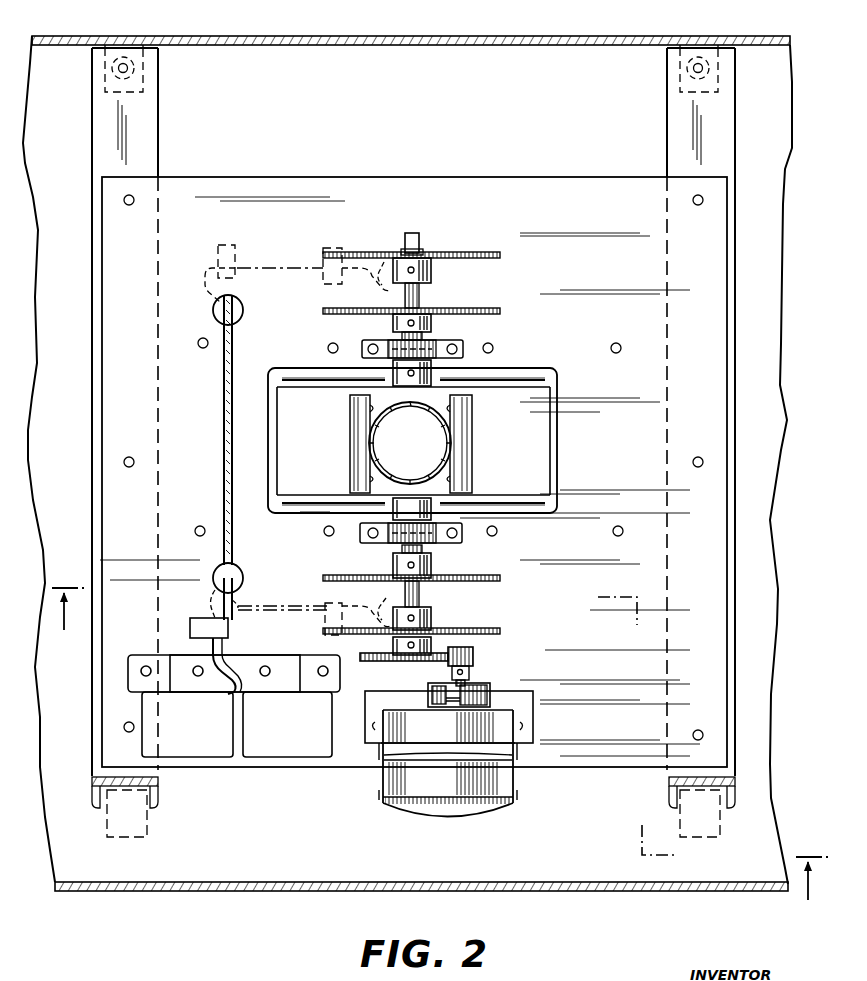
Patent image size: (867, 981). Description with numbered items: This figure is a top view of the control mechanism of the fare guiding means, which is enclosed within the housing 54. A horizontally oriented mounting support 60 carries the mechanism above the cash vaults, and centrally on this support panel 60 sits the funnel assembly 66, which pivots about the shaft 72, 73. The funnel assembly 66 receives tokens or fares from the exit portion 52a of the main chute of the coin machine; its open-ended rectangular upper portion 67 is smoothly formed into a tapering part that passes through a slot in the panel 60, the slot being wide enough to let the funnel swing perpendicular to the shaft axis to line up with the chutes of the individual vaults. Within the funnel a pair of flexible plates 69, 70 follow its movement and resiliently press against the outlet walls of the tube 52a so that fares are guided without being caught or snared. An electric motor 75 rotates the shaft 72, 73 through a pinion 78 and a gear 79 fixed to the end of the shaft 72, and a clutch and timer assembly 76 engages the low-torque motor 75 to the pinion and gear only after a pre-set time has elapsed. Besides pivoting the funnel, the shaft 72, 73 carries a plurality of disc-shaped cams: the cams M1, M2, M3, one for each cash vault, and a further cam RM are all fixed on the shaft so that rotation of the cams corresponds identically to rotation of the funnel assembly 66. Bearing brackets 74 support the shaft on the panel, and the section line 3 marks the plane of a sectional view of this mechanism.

The housing 54 is at (566, 34).
The mounting support 60 is at (511, 187).
The shaft 72 is at (422, 248).
The cam RM is at (487, 256).
The cam M1 is at (487, 312).
The bearing bracket 74 is at (463, 352).
The funnel assembly 66 is at (437, 431).
The rectangular upper portion 67 is at (557, 462).
The flexible plate 70 is at (349, 438).
The flexible plate 69 is at (473, 448).
The exit portion of the main chute 52a is at (386, 474).
The shaft 73 is at (421, 603).
The cam M2 is at (489, 579).
The cam M3 is at (489, 632).
The gear 79 is at (358, 655).
The pinion 78 is at (474, 663).
The clutch and timer assembly 76 is at (490, 692).
The electric motor 75 is at (483, 812).
The section line 3- 3 is at (440, 765).